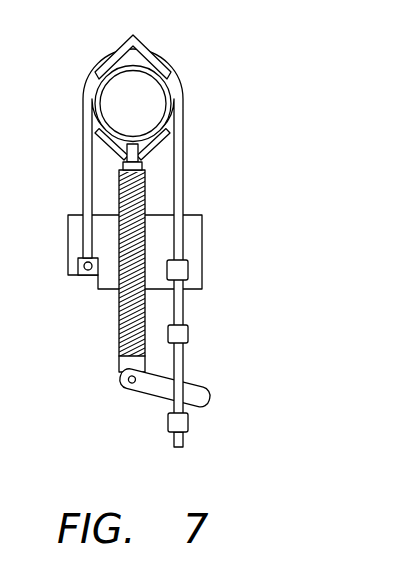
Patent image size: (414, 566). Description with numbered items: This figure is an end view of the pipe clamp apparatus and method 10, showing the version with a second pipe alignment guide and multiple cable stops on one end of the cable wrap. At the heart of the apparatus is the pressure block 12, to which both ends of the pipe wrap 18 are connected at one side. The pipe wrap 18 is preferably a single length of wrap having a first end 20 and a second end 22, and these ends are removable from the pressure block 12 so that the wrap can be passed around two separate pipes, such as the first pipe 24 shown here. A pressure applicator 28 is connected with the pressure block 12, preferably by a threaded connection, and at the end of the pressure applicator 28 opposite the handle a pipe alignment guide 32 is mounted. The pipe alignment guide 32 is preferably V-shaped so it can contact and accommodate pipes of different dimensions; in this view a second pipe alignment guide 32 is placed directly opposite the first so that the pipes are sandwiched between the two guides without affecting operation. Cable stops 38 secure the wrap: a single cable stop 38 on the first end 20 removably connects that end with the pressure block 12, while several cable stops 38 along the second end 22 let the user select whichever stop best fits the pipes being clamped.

The pipe clamp apparatus and method 10 is at (273, 122).
The pressure block 12 is at (203, 238).
The pipe wrap 18 is at (83, 143).
The first end 20 is at (82, 247).
The second end 22 is at (183, 440).
The first pipe 24 is at (170, 87).
The pressure applicator 28 is at (119, 333).
The pipe alignment guide 32 is at (125, 47).
The cable stop 38 is at (87, 272).